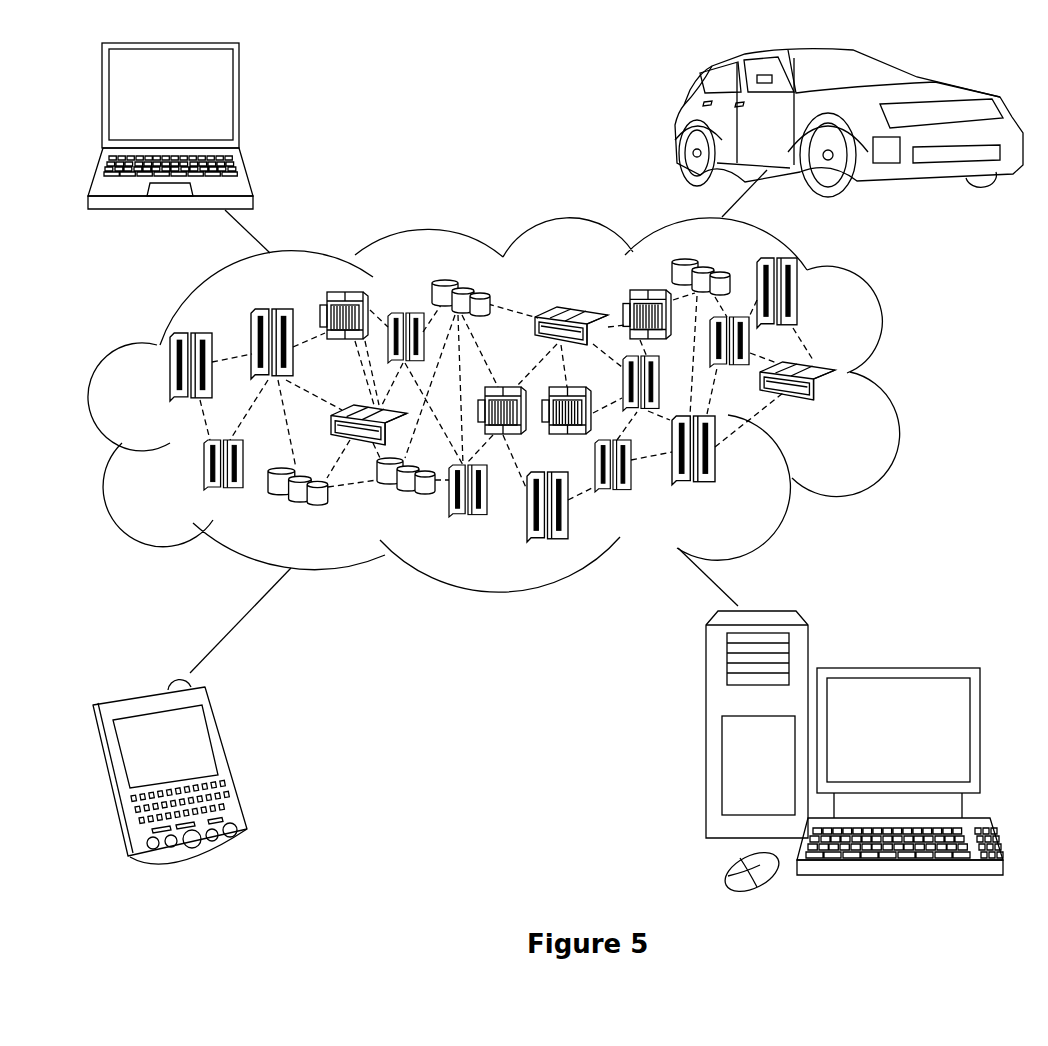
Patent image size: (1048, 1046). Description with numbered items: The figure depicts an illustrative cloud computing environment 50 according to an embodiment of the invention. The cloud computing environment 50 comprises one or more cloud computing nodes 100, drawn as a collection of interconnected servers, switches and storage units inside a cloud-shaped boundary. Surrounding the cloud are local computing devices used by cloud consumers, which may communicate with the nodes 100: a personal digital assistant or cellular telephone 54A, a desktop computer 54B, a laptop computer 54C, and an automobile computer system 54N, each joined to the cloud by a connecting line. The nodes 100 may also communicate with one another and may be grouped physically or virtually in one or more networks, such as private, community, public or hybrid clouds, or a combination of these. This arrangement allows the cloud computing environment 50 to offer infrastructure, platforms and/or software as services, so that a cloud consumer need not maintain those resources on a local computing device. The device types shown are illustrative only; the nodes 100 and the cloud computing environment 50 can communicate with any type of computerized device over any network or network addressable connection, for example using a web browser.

The personal digital assistant or cellular telephone 54A is at (228, 760).
The desktop computer 54B is at (897, 667).
The laptop computer 54C is at (239, 106).
The automobile computer system 54N is at (677, 122).
The cloud computing environment 50 is at (898, 378).
The cloud computing nodes 100 is at (838, 408).